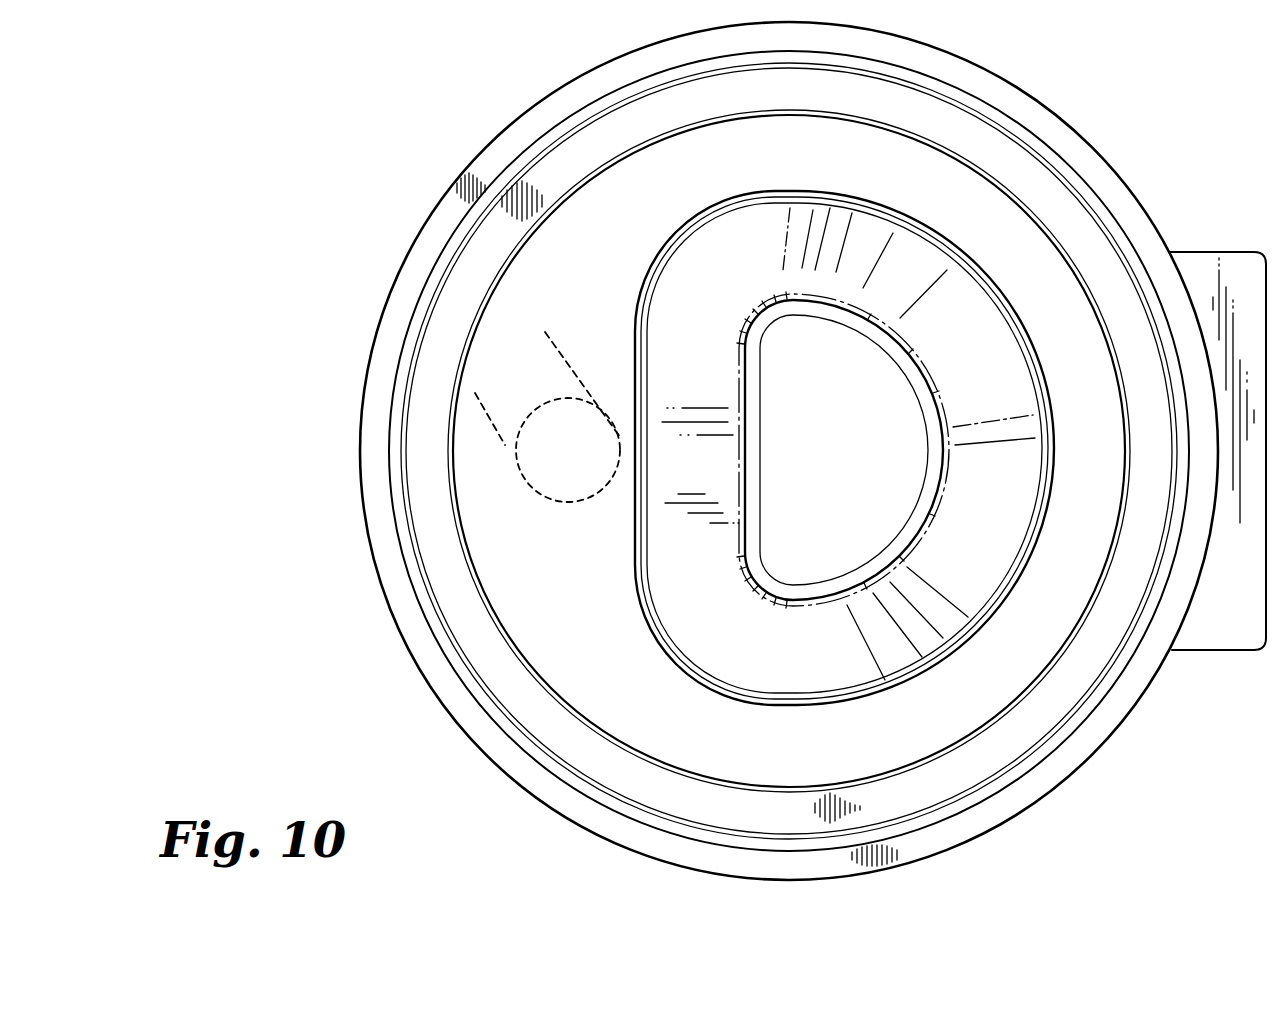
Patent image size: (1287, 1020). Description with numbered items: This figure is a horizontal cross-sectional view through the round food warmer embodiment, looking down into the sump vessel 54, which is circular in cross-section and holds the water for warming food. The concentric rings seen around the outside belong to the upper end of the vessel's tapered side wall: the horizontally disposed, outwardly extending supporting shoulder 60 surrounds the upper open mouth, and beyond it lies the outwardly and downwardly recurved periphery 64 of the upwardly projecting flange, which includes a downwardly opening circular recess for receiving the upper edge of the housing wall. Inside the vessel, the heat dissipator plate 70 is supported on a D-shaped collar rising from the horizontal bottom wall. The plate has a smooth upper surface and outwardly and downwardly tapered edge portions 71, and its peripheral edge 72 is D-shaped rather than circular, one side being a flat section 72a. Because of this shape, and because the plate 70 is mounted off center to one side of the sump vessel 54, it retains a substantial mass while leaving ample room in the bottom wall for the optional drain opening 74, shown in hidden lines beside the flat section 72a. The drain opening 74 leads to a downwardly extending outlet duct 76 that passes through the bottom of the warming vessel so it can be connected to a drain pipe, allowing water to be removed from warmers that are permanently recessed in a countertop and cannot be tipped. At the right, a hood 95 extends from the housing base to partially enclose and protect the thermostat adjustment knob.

The sump vessel 54 is at (1100, 748).
The supporting shoulder 60 is at (998, 777).
The recurved periphery 64 is at (938, 840).
The heat dissipator plate 70 is at (818, 449).
The tapered edge portions 71 is at (660, 315).
The peripheral edge 72 is at (643, 628).
The flat section 72a is at (633, 498).
The drain opening 74 is at (562, 500).
The outlet duct 76 is at (505, 447).
The hood 95 is at (1217, 652).